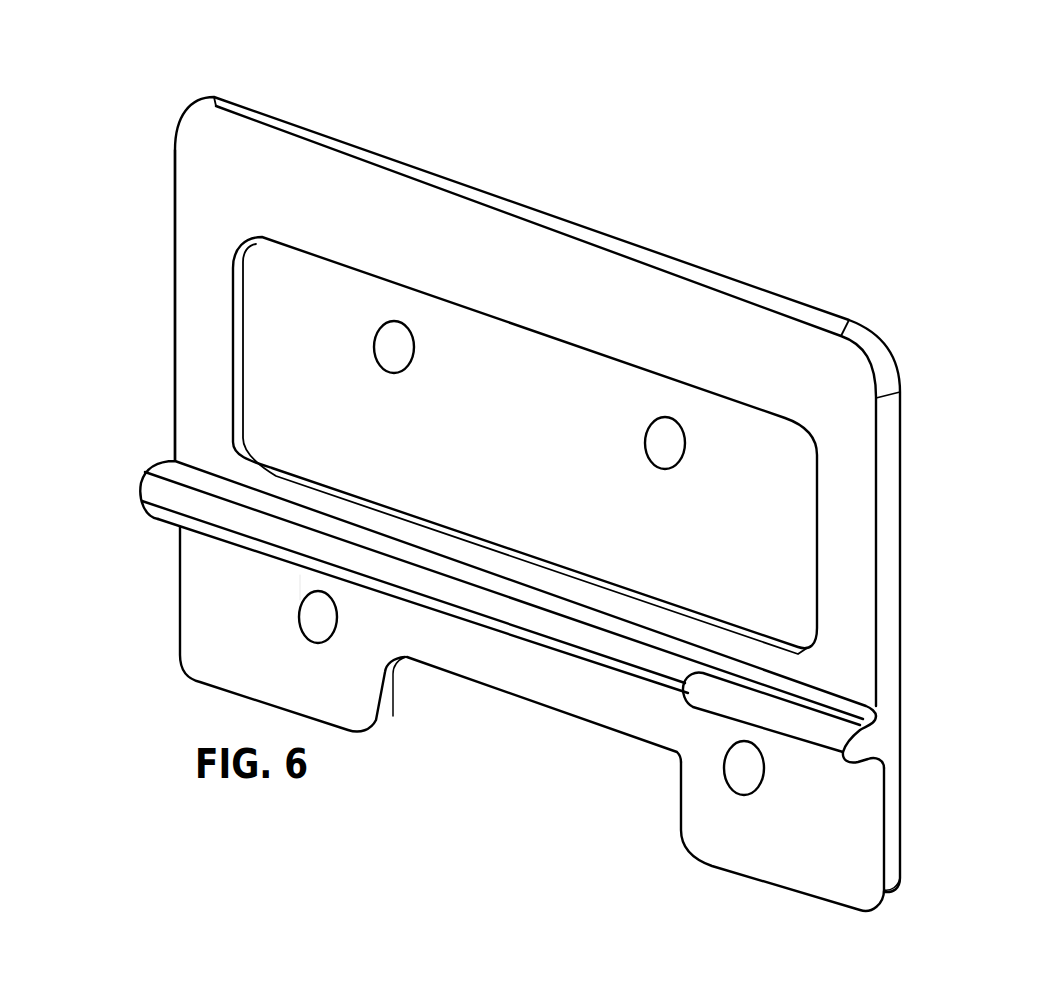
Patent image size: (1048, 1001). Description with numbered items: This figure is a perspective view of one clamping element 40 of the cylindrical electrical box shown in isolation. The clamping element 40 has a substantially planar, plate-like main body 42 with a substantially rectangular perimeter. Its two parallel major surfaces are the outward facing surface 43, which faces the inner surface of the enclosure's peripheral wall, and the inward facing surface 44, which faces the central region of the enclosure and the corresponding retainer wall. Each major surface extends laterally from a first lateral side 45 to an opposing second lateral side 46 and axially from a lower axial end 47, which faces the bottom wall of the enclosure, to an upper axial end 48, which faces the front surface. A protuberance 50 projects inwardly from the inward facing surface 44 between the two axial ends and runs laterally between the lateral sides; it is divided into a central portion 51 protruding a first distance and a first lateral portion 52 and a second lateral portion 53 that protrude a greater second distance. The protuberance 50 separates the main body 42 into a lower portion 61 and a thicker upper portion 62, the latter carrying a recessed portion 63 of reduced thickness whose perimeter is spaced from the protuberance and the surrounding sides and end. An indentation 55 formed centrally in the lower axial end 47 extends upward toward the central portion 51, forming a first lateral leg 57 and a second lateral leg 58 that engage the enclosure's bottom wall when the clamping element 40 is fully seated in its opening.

The clamping element 40 is at (168, 110).
The main body 42 is at (383, 200).
The outward facing surface 43 is at (900, 445).
The inward facing surface 44 is at (848, 490).
The first lateral side 45 is at (173, 262).
The second lateral side 46 is at (893, 632).
The lower axial end 47 is at (750, 868).
The upper axial end 48 is at (692, 272).
The protuberance 50 is at (517, 645).
The central portion 51 is at (470, 610).
The first lateral portion 52 is at (190, 511).
The second lateral portion 53 is at (723, 696).
The indentation 55 is at (558, 718).
The first lateral leg 57 is at (212, 637).
The second lateral leg 58 is at (852, 863).
The lower portion 61 is at (168, 319).
The upper portion 62 is at (176, 595).
The recessed portion 63 is at (295, 362).